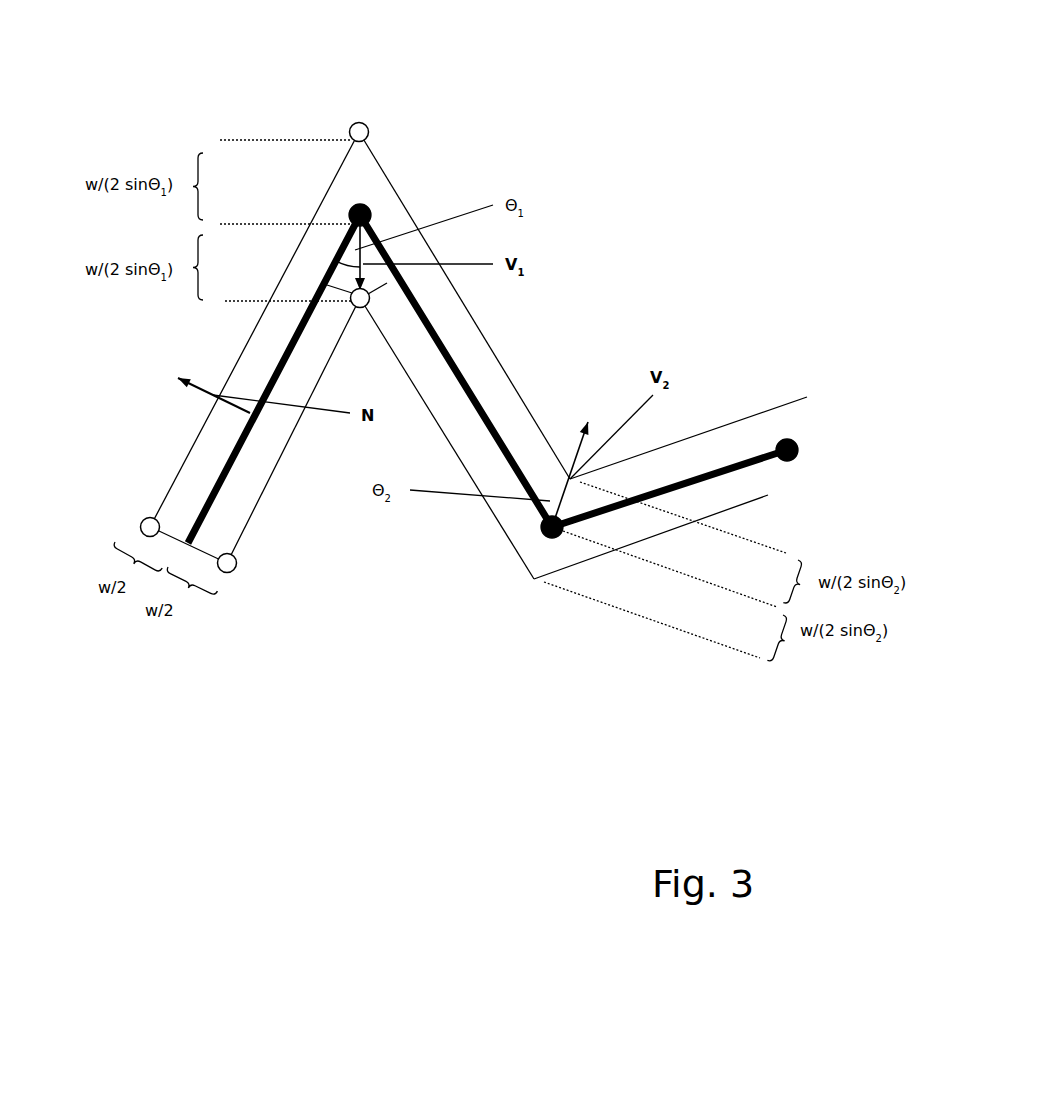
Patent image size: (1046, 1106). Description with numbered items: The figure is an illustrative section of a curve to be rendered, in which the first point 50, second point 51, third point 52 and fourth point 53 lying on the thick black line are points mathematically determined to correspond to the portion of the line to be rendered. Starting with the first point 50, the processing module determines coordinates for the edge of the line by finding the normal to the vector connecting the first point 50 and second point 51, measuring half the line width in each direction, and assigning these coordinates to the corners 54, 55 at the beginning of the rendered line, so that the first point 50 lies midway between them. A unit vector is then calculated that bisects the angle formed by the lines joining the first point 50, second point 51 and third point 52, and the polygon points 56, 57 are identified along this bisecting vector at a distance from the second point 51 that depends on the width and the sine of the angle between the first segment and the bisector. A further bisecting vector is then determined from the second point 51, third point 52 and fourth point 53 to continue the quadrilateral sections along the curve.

The first point 50 is at (188, 543).
The second point 51 is at (366, 210).
The third point 52 is at (552, 527).
The fourth point 53 is at (787, 440).
The corner 54 is at (141, 525).
The corner 55 is at (233, 571).
The polygon point 56 is at (362, 124).
The polygon point 57 is at (369, 299).